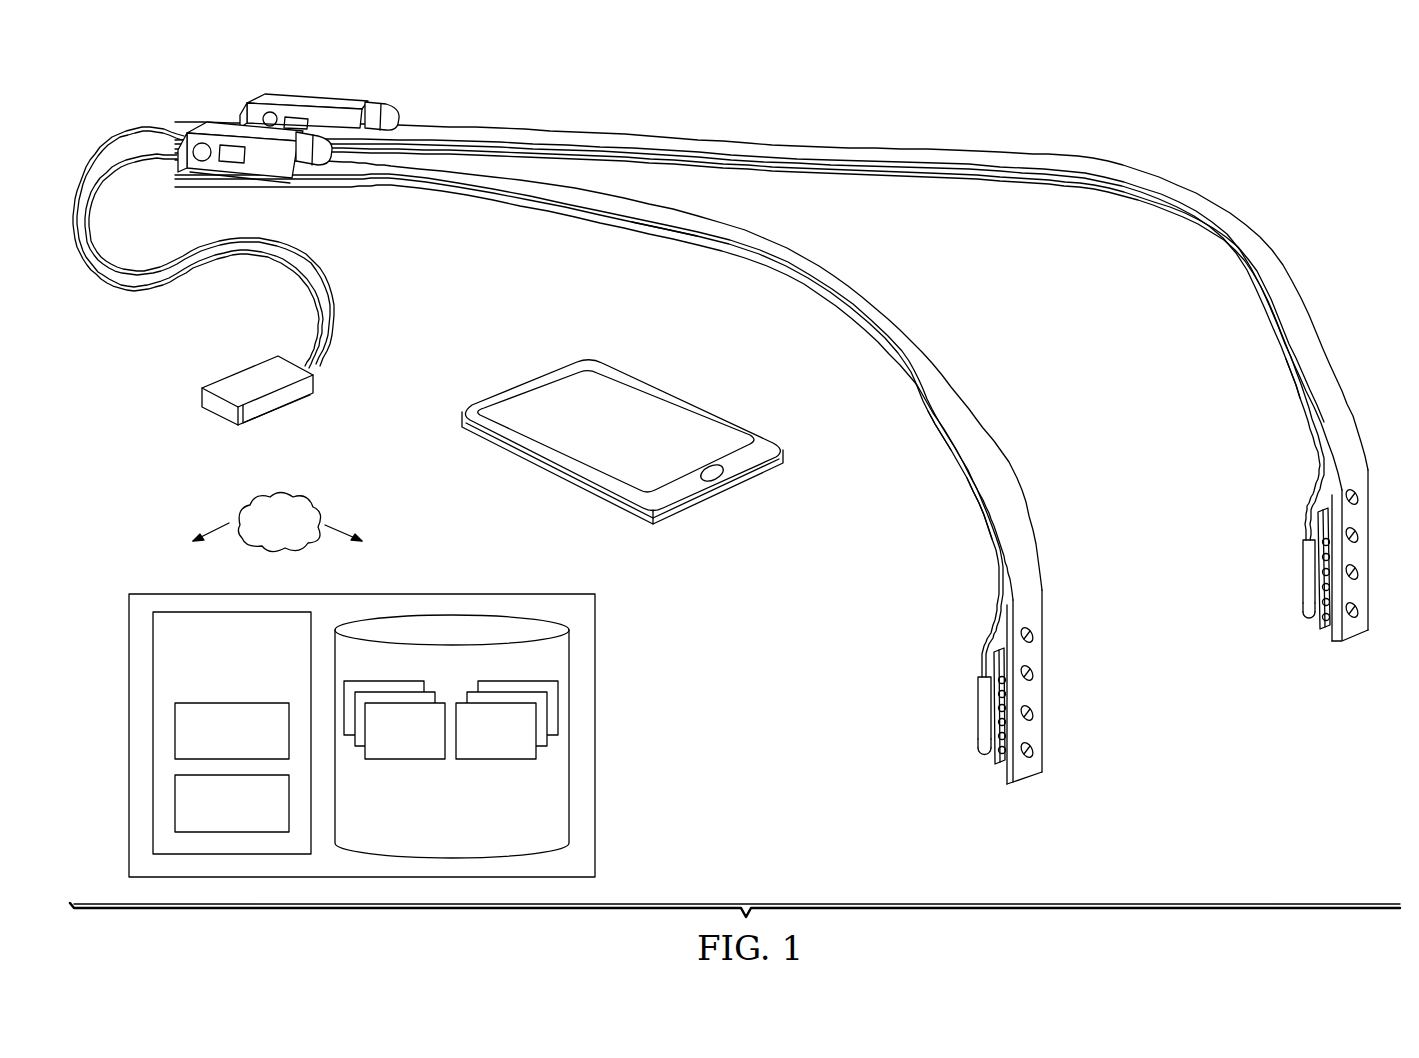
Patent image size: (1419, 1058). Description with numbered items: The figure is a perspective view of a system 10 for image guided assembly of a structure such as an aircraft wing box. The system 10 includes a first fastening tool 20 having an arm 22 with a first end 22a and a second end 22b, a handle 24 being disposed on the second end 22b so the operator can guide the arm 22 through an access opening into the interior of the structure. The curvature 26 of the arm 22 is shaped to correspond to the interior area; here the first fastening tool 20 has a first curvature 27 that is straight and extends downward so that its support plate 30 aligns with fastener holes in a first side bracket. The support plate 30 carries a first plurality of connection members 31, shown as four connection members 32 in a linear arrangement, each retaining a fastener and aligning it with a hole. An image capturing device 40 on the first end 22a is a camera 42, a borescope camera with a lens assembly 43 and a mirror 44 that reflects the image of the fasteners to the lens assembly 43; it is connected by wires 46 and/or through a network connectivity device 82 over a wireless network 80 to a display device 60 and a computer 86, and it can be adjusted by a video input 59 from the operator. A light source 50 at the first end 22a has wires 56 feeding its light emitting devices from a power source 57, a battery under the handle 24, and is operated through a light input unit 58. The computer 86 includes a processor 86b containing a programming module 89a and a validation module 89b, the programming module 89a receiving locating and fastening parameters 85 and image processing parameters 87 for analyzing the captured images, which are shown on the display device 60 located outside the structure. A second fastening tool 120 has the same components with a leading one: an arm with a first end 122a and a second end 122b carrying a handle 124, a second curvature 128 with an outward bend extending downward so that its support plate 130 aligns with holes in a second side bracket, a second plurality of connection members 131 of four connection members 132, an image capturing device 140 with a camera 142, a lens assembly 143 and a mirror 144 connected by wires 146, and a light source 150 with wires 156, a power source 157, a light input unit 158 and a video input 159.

The system 10 is at (1264, 148).
The first fastening tool 20 is at (789, 246).
The arm 22 is at (847, 297).
The first end 22a is at (1025, 779).
The second end 22b is at (181, 170).
The handle 24 is at (232, 130).
The curvature 26 is at (530, 215).
The first curvature 27 is at (932, 442).
The support plate 30 is at (1030, 593).
The first plurality of connection members 31 is at (1052, 721).
The connection member 32 is at (1034, 637).
The image capturing device 40 is at (966, 708).
The camera 42 is at (978, 685).
The lens assembly 43 is at (983, 740).
The mirror 44 is at (985, 756).
The wires 46 is at (672, 248).
The light source 50 is at (991, 767).
The wires 56 is at (980, 530).
The power source 57 is at (330, 160).
The light input unit 58 is at (203, 143).
The video input 59 is at (232, 165).
The display device 60 is at (560, 486).
The wireless network 80 is at (258, 495).
The network connectivity device 82 is at (235, 378).
The locating and fastening parameters 85 is at (392, 746).
The computer 86 is at (431, 591).
The processor 86b is at (216, 688).
The image processing parameters 87 is at (483, 746).
The programming module 89a is at (215, 745).
The validation module 89b is at (215, 817).
The second fastening tool 120 is at (799, 145).
The first end 122a is at (1345, 640).
The second end 122b is at (262, 100).
The handle 124 is at (365, 102).
The second curvature 128 is at (1125, 161).
The support plate 130 is at (1340, 468).
The second plurality of connection members 131 is at (1380, 592).
The connection member 132 is at (1356, 535).
The image capturing device 140 is at (1295, 568).
The camera 142 is at (1303, 548).
The lens assembly 143 is at (1305, 598).
The mirror 144 is at (1312, 614).
The wires 146 is at (1035, 188).
The light source 150 is at (1318, 624).
The wires 156 is at (1290, 380).
The power source 157 is at (400, 113).
The light input unit 158 is at (272, 113).
The video input 159 is at (297, 130).